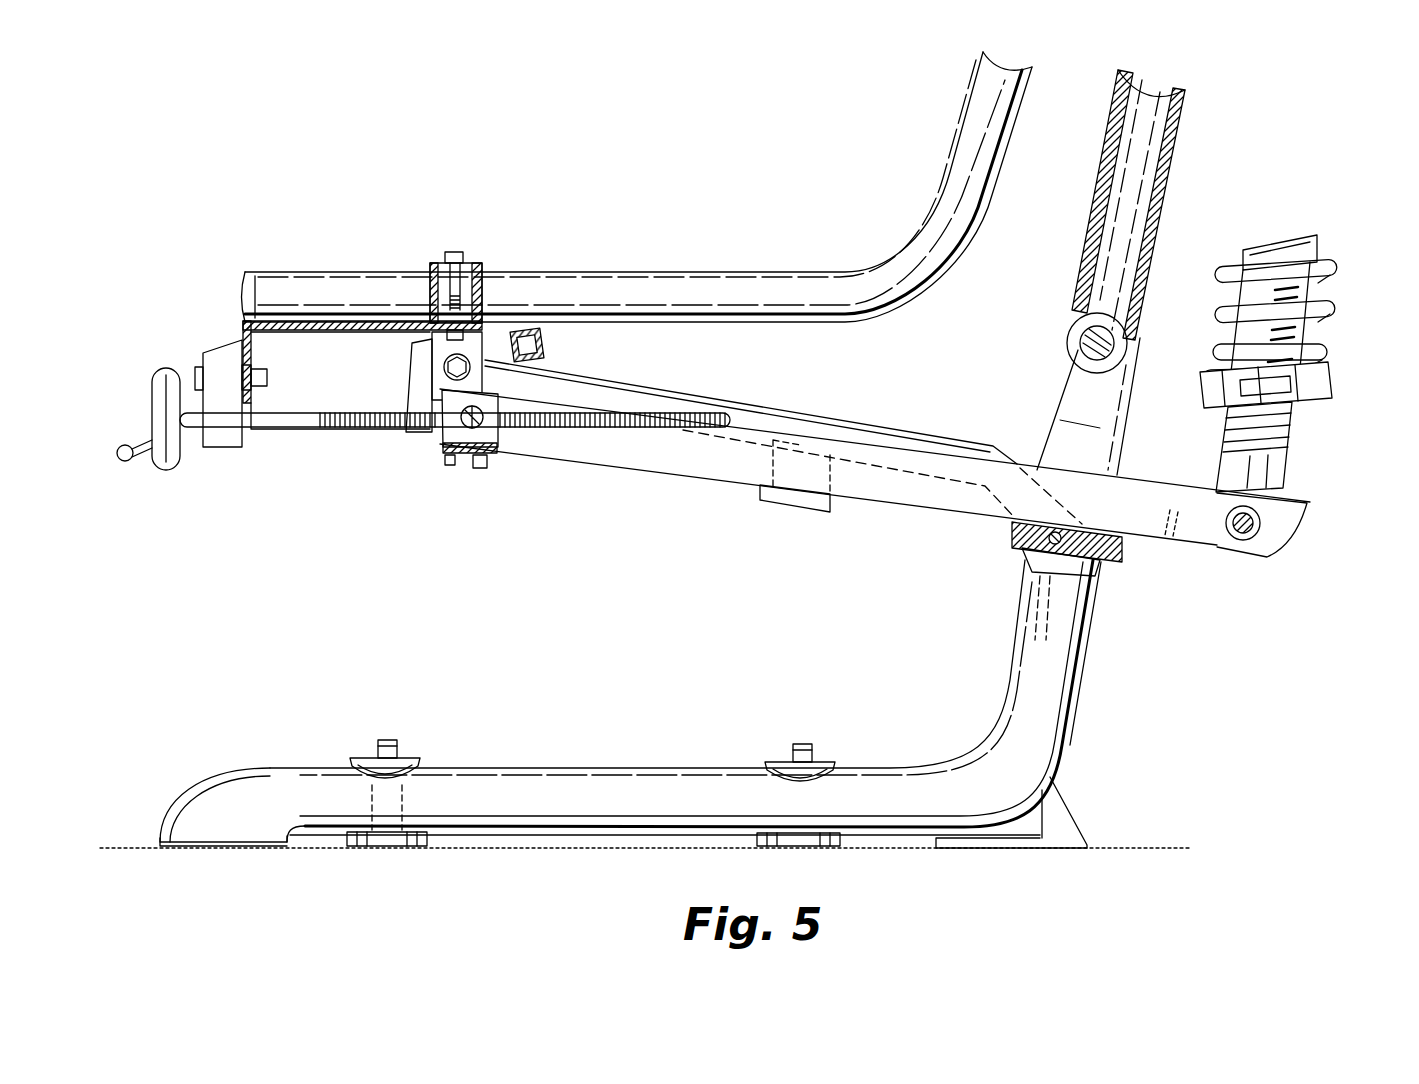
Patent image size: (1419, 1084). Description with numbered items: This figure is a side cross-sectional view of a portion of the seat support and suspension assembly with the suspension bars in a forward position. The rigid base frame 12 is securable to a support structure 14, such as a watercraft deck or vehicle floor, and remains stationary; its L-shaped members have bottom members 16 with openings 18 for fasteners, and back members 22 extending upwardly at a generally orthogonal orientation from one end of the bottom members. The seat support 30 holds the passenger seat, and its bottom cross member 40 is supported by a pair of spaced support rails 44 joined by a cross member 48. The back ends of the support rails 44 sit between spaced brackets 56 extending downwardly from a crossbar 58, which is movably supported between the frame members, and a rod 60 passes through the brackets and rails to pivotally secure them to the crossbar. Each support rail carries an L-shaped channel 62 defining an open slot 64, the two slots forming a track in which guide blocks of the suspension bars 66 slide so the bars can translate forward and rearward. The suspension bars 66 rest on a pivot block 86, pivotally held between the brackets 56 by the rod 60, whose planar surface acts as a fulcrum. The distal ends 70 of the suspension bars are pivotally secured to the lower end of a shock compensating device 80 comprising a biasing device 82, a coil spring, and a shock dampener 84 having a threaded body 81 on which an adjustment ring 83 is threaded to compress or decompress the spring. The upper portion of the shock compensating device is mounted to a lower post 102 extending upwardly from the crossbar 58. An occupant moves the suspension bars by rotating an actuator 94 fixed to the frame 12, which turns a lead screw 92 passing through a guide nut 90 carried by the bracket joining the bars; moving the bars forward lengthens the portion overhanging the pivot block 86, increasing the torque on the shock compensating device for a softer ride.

The base frame 12 is at (650, 704).
The support structure 14 is at (1160, 845).
The bottom members 16 is at (297, 768).
The openings 18 is at (418, 790).
The back members 22 is at (1000, 690).
The seat support 30 is at (683, 272).
The bottom cross member 40 is at (440, 262).
The support rails 44 is at (778, 410).
The cross member 48 is at (545, 348).
The brackets 56 is at (1050, 430).
The crossbar 58 is at (1083, 332).
The rod 60 is at (1035, 575).
The L-shaped channel 62 is at (425, 385).
The open slot 64 is at (752, 500).
The suspension bars 66 is at (905, 462).
The distal ends 70 is at (1213, 522).
The shock compensating device 80 is at (1283, 337).
The threaded body 81 is at (1274, 303).
The biasing device 82 is at (1270, 322).
The adjustment ring 83 is at (1266, 385).
The shock dampener 84 is at (1254, 447).
The pivot block 86 is at (1125, 550).
The guide nut 90 is at (490, 455).
The lead screw 92 is at (356, 430).
The actuator 94 is at (145, 385).
The lower post 102 is at (1090, 223).